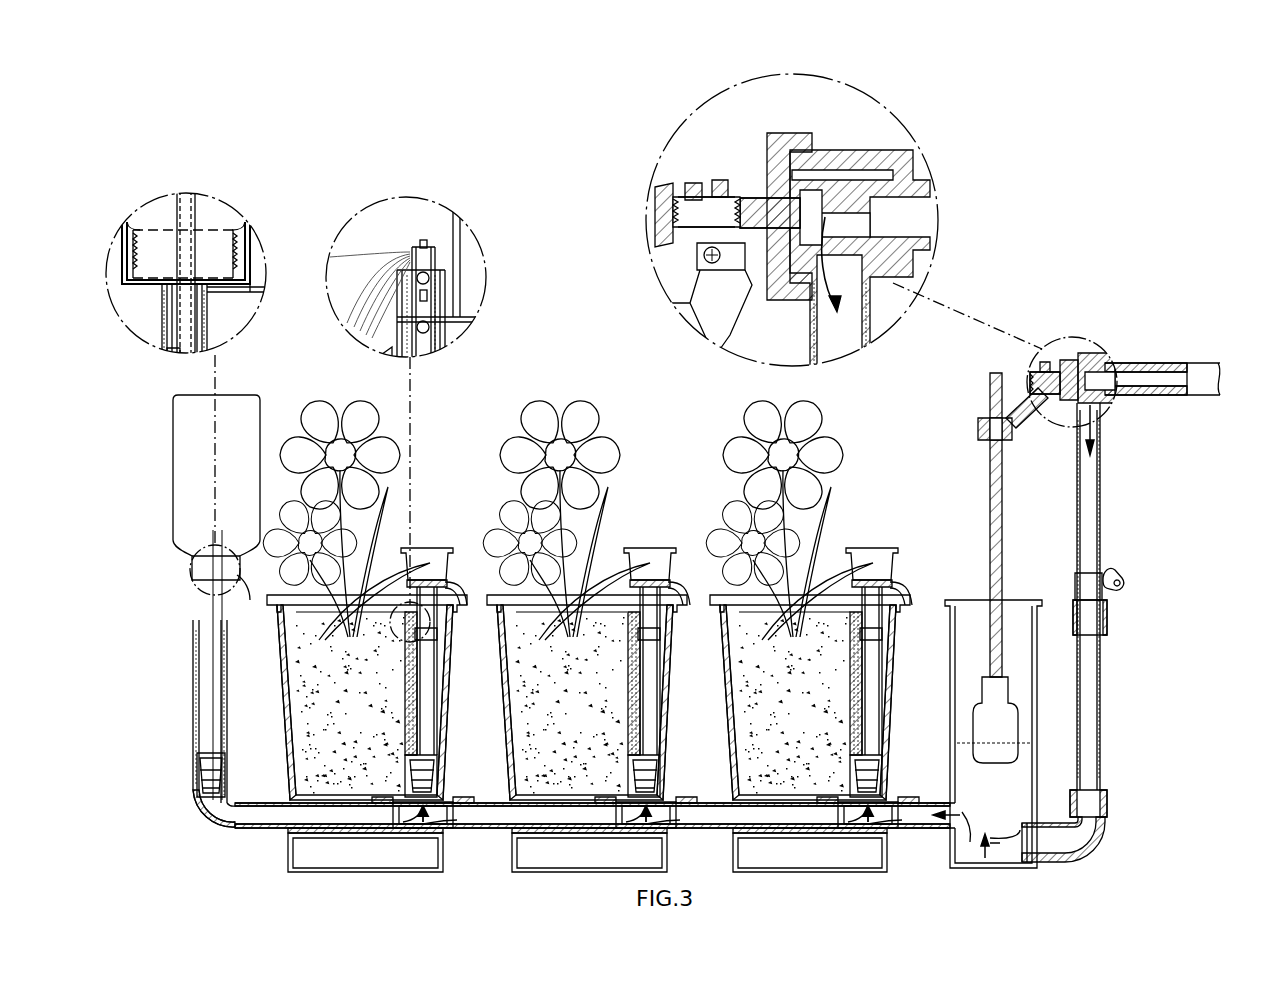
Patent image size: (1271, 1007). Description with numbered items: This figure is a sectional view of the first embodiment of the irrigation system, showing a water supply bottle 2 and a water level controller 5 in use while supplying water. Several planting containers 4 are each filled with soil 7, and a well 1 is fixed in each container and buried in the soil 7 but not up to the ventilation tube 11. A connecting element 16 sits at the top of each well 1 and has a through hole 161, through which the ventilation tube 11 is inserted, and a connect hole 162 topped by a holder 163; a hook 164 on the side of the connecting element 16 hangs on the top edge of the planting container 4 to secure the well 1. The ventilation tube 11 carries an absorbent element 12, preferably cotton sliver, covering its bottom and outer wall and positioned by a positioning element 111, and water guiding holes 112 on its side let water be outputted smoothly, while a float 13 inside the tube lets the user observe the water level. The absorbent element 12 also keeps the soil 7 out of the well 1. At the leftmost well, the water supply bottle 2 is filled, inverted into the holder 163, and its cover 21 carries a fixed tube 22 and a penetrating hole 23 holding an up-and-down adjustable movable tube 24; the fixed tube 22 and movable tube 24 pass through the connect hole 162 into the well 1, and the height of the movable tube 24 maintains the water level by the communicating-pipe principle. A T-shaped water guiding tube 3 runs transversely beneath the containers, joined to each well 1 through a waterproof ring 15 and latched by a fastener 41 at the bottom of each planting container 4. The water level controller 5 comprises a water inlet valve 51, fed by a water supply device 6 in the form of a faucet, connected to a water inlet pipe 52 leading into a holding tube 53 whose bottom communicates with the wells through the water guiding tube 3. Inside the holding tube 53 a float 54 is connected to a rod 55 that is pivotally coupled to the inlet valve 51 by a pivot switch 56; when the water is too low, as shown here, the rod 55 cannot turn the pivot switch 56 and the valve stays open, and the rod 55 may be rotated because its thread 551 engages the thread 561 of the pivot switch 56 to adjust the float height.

The well 1 is at (195, 708).
The water supply bottle 2 is at (183, 446).
The water guiding tube 3 is at (486, 830).
The planting container 4 is at (445, 853).
The water level controller 5 is at (1135, 338).
The water supply device 6 is at (1188, 366).
The soil 7 is at (315, 740).
The ventilation tube 11 is at (432, 258).
The absorbent element 12 is at (345, 268).
The float 13 is at (427, 244).
The waterproof ring 15 is at (200, 790).
The connecting element 16 is at (162, 320).
The cover 21 is at (135, 242).
The fixed tube 22 is at (203, 753).
The penetrating hole 23 is at (175, 352).
The movable tube 24 is at (188, 212).
The fastener 41 is at (380, 833).
The water inlet valve 51 is at (880, 165).
The water inlet pipe 52 is at (1106, 660).
The holding tube 53 is at (1032, 706).
The float 54 is at (1000, 750).
The rod 55 is at (996, 535).
The pivot switch 56 is at (702, 320).
The positioning element 111 is at (443, 275).
The water guiding holes 112 is at (420, 330).
The through hole 161 is at (403, 310).
The connect hole 162 is at (167, 302).
The holder 163 is at (455, 570).
The hook 164 is at (470, 598).
The thread 551 is at (992, 381).
The thread 561 is at (978, 428).